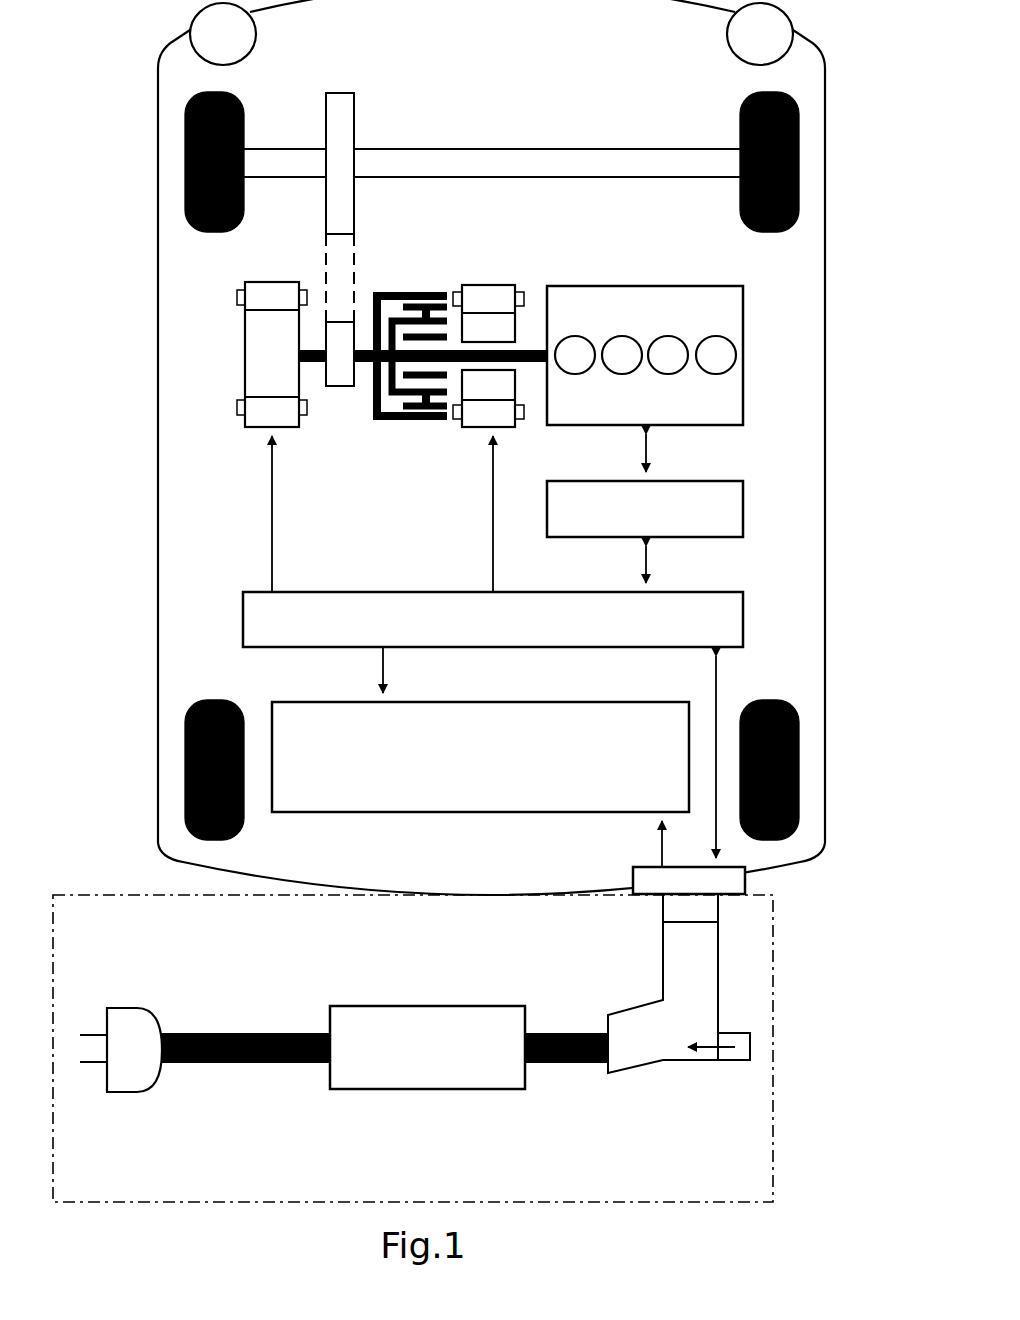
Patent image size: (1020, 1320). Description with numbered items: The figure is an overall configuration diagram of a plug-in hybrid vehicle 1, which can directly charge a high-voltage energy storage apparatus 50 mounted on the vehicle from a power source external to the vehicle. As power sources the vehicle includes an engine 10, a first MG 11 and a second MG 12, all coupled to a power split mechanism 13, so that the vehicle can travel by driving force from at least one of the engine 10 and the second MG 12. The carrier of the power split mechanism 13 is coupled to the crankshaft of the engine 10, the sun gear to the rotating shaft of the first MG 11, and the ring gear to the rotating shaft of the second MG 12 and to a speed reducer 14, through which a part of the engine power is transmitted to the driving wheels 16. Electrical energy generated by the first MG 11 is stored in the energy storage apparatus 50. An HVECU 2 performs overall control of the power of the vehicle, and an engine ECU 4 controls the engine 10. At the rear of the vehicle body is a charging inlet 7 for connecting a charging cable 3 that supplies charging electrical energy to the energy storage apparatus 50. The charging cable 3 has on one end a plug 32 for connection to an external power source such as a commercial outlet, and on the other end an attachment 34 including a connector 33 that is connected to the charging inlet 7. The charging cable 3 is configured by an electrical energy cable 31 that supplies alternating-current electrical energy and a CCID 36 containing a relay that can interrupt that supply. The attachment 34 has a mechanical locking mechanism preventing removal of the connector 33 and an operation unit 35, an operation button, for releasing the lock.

The plug-in hybrid vehicle 1 is at (828, 176).
The HVECU 2 is at (333, 593).
The charging cable 3 is at (781, 1032).
The engine ECU 4 is at (745, 510).
The charging inlet 7 is at (633, 880).
The engine 10 is at (745, 347).
The first MG 11 is at (498, 286).
The second MG 12 is at (258, 283).
The power split mechanism 13 is at (400, 294).
The speed reducer 14 is at (355, 94).
The driving wheels 16 is at (525, 149).
The electrical energy cable 31 is at (242, 1064).
The plug 32 is at (128, 1093).
The connector 33 is at (663, 900).
The attachment 34 is at (663, 950).
The operation unit 35 is at (735, 1061).
The CCID 36 is at (432, 1091).
The energy storage apparatus 50 is at (487, 813).